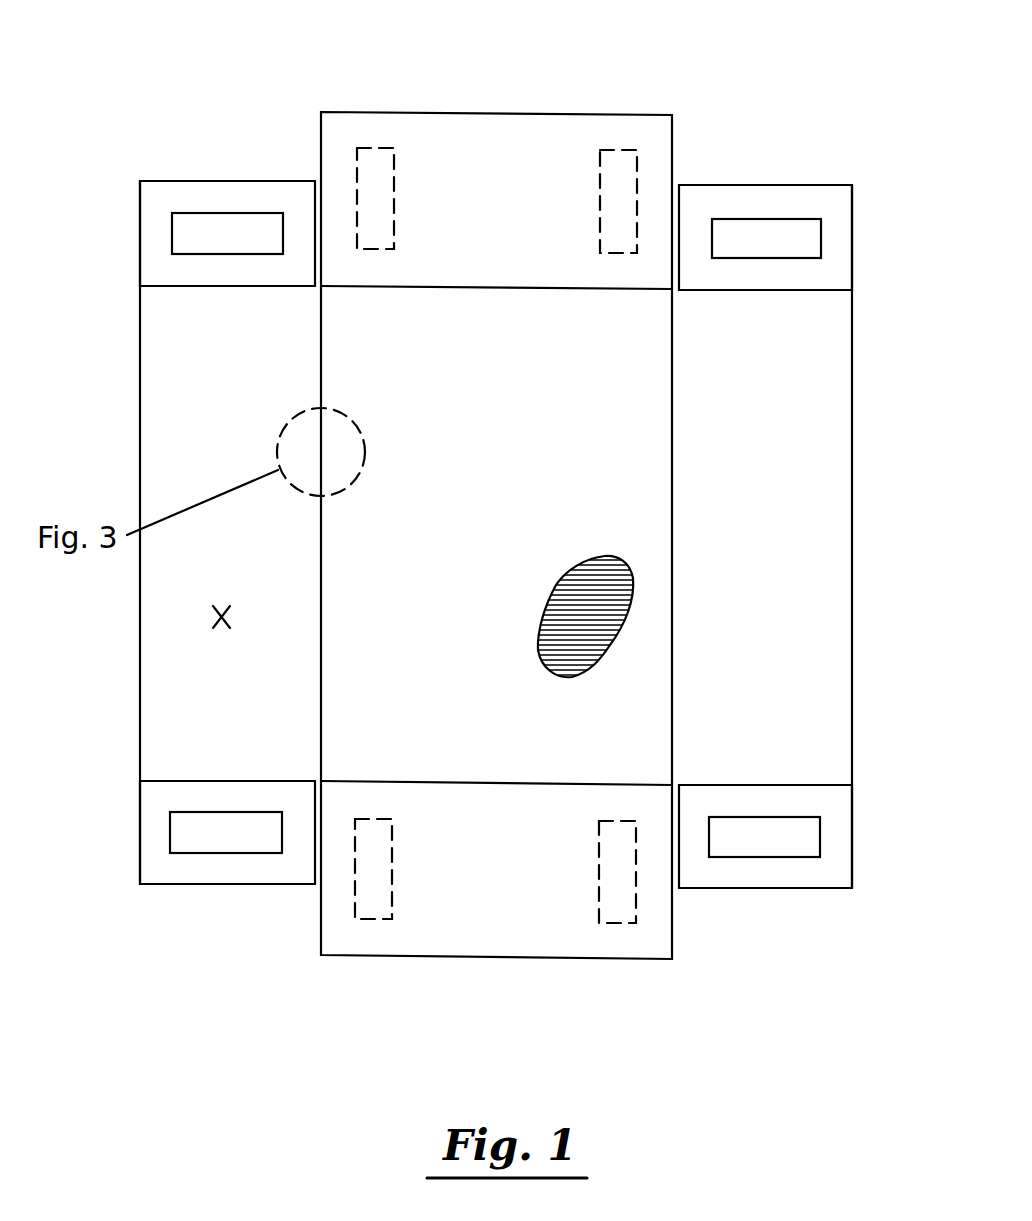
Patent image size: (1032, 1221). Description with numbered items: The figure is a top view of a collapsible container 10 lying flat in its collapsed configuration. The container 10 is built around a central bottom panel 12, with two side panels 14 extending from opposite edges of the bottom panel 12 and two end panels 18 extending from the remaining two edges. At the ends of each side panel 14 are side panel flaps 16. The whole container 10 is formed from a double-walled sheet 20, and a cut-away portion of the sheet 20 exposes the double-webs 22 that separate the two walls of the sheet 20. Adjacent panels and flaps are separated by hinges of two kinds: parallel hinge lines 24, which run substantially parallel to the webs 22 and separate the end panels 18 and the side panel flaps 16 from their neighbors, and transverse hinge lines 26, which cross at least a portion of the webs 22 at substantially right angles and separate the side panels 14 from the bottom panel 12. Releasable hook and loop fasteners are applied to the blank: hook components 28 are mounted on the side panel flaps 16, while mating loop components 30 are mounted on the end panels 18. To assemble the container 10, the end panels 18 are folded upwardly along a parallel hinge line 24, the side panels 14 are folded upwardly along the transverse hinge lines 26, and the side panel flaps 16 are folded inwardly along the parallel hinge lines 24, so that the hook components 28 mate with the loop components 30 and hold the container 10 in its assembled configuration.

The collapsible container 10 is at (549, 110).
The bottom panel 12 is at (615, 440).
The side panels 14 is at (180, 418).
The side panel flaps 16 is at (198, 181).
The end panels 18 is at (472, 157).
The double-walled sheet 20 is at (215, 615).
The double-webs 22 is at (600, 627).
The parallel hinge lines 24 is at (198, 288).
The transverse hinge lines 26 is at (320, 648).
The hook components 28 is at (172, 235).
The loop components 30 is at (357, 163).